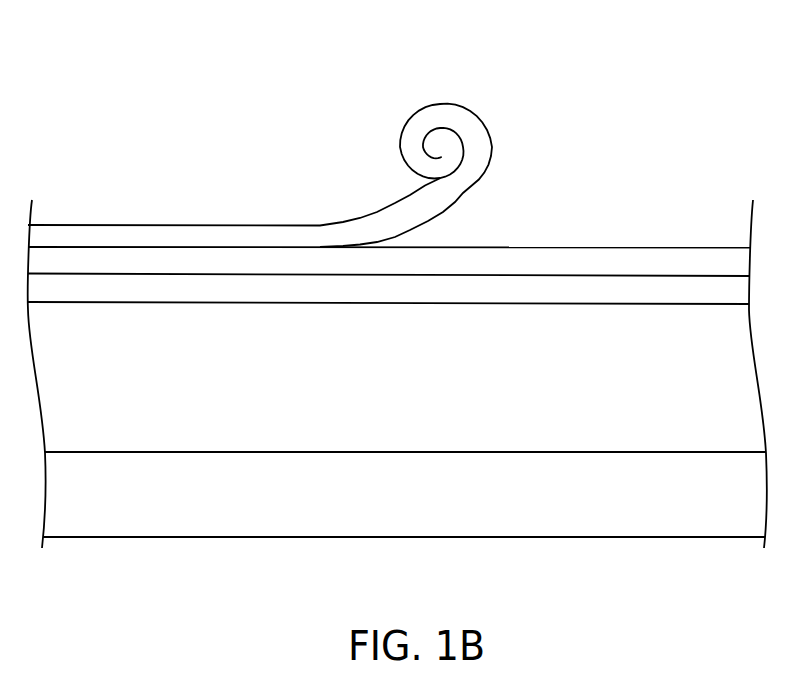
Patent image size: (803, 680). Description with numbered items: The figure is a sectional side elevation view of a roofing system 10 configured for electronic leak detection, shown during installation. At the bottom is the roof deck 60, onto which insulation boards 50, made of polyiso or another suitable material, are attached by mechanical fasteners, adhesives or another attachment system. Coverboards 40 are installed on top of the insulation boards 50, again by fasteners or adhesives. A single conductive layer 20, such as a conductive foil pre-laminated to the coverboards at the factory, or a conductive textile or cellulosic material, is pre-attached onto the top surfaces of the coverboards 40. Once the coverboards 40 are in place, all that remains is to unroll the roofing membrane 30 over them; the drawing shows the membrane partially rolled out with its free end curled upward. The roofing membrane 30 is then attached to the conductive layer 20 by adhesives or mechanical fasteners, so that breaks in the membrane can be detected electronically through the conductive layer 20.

The roofing system 10 is at (514, 34).
The conductive layer 20 is at (515, 260).
The roofing membrane 30 is at (477, 146).
The coverboards 40 is at (567, 285).
The insulation boards 50 is at (621, 327).
The roof deck 60 is at (660, 480).